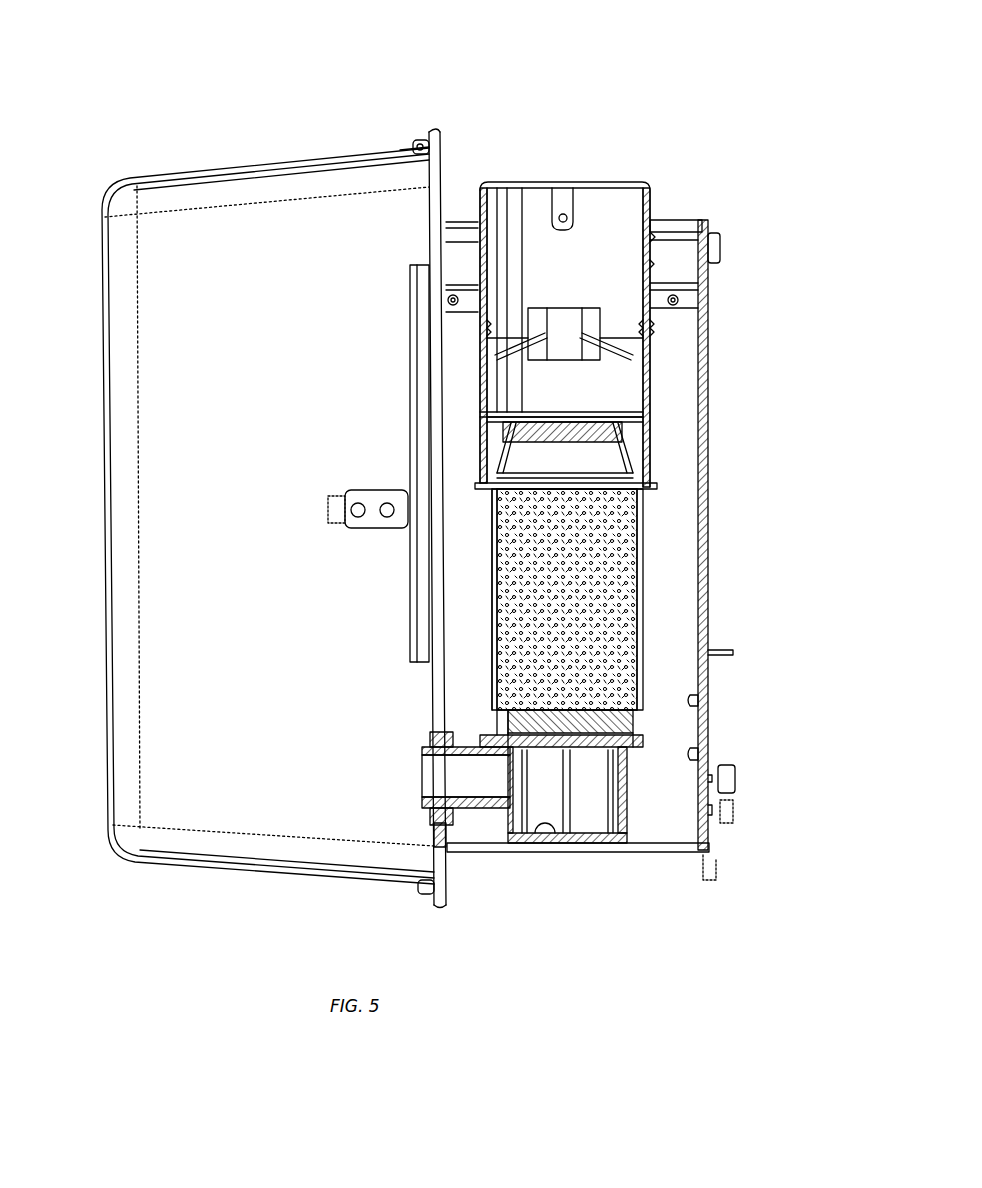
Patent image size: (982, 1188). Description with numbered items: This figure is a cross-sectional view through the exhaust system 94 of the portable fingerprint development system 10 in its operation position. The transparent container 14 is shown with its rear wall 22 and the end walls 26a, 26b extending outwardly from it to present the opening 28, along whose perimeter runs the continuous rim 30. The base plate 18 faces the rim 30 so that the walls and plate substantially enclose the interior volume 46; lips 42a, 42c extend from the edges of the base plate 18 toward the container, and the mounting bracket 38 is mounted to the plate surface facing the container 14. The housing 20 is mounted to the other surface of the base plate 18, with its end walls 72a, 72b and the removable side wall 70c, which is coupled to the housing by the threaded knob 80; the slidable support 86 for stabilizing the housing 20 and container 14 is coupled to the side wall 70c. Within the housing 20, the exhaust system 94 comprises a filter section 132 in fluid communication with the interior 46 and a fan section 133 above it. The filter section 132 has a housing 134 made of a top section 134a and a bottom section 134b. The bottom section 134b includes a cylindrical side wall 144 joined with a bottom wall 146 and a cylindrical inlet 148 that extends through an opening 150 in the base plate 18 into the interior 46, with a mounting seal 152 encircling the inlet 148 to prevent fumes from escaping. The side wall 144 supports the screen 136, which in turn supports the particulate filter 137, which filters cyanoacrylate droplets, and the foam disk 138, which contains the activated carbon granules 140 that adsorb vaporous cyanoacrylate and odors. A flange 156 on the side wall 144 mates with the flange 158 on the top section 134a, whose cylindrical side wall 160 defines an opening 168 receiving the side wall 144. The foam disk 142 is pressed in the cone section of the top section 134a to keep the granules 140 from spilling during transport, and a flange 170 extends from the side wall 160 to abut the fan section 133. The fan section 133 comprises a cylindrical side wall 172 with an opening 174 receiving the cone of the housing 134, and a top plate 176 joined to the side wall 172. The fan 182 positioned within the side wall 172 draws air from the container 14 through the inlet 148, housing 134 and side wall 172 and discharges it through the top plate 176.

The portable fingerprint development system 10 is at (454, 70).
The container 14 is at (178, 172).
The base plate 18 is at (443, 156).
The housing 20 is at (706, 300).
The rear wall 22 is at (104, 358).
The end wall 26a is at (254, 170).
The end wall 26b is at (182, 866).
The opening 28 is at (420, 188).
The rim 30 is at (428, 140).
The mounting bracket 38 is at (412, 298).
The lip 42a is at (440, 133).
The lip 42c is at (434, 906).
The interior volume 46 is at (189, 654).
The side wall 70c is at (708, 560).
The end wall 72a is at (672, 220).
The end wall 72b is at (652, 852).
The threaded knob 80 is at (722, 240).
The support 86 is at (722, 882).
The exhaust system 94 is at (646, 180).
The filter section 132 is at (660, 545).
The fan section 133 is at (607, 165).
The housing 134 is at (623, 599).
The top section 134a is at (642, 626).
The bottom section 134b is at (634, 774).
The screen 136 is at (560, 790).
The particulate filter 137 is at (478, 730).
The foam disk 138 is at (500, 718).
The activated carbon granules 140 is at (494, 568).
The foam disk 142 is at (500, 440).
The side wall 144 is at (630, 805).
The bottom wall 146 is at (547, 845).
The inlet 148 is at (427, 802).
The opening 150 is at (425, 748).
The mounting seal 152 is at (433, 836).
The flange 156 is at (700, 750).
The flange 158 is at (660, 738).
The side wall 160 is at (645, 598).
The opening 168 is at (655, 732).
The flange 170 is at (652, 488).
The side wall 172 is at (648, 356).
The opening 174 is at (641, 470).
The top plate 176 is at (526, 186).
The fan 182 is at (568, 308).